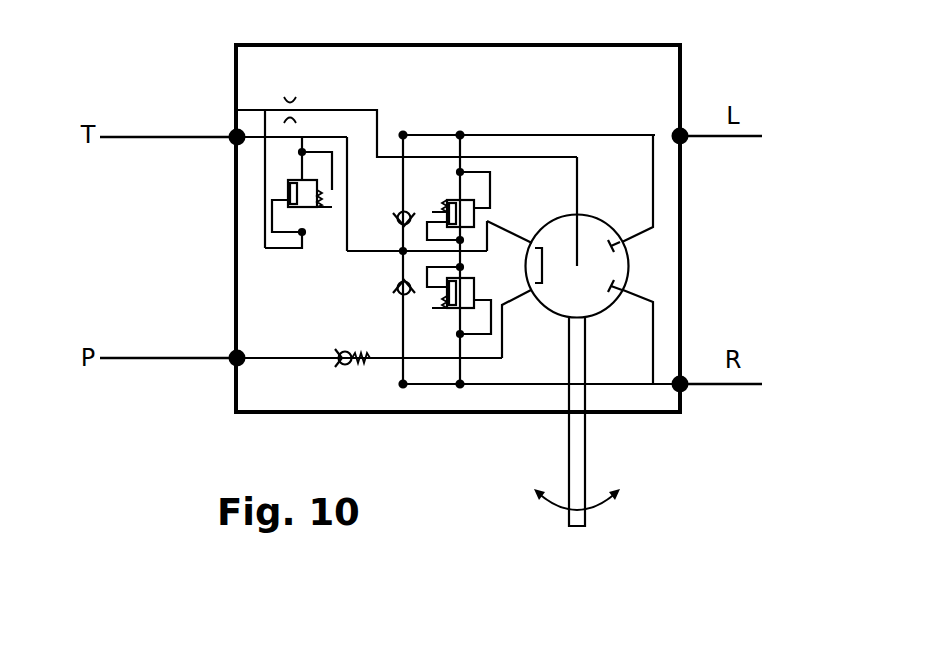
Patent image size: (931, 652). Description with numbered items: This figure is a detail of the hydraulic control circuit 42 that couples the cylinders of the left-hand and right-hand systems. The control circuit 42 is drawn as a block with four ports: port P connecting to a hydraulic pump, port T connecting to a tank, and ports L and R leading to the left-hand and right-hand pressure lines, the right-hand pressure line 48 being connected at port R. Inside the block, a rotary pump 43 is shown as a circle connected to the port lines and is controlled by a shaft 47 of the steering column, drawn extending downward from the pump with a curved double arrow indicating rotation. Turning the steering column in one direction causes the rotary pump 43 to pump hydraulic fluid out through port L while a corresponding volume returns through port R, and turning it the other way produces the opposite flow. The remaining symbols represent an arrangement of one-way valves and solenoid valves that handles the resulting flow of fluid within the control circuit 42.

The control circuit 42 is at (722, 280).
The rotary pump 43 is at (606, 227).
The shaft 47 is at (575, 516).
The right-hand pressure line 48 is at (386, 270).